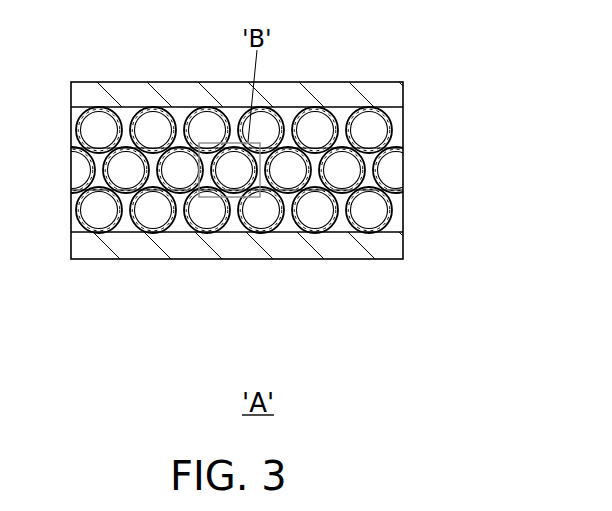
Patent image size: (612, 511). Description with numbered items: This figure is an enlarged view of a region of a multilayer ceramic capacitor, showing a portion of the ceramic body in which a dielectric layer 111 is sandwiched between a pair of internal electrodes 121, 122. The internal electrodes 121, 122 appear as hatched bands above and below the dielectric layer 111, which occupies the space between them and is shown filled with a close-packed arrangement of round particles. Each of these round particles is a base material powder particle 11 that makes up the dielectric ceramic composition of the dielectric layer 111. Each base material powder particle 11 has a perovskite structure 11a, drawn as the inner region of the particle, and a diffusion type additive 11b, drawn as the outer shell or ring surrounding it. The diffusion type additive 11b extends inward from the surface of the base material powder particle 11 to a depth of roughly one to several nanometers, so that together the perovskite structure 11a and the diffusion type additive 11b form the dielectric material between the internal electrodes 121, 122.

The internal electrode 121 is at (394, 93).
The internal electrode 122 is at (393, 250).
The dielectric layer 111 is at (262, 238).
The base material powder particle 11 is at (310, 258).
The perovskite structure 11a is at (283, 183).
The diffusion type additive 11b is at (318, 193).